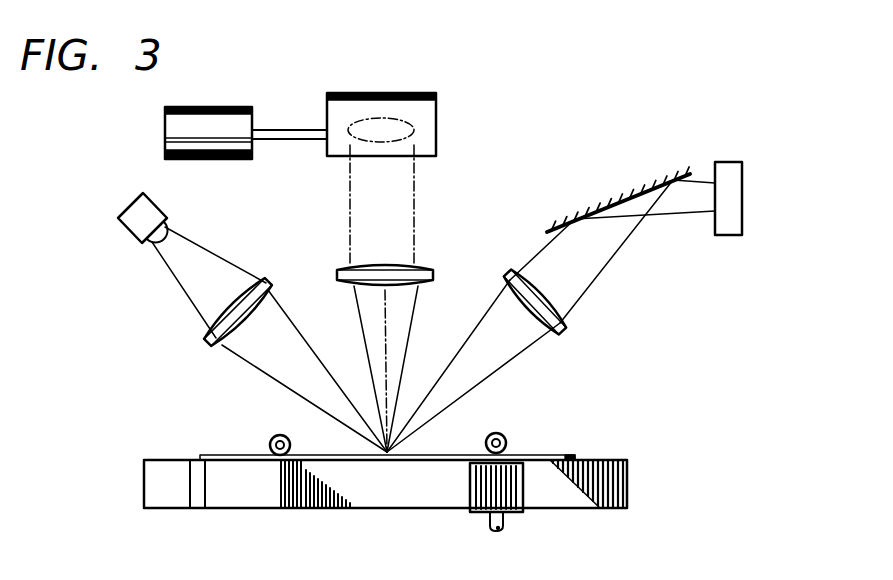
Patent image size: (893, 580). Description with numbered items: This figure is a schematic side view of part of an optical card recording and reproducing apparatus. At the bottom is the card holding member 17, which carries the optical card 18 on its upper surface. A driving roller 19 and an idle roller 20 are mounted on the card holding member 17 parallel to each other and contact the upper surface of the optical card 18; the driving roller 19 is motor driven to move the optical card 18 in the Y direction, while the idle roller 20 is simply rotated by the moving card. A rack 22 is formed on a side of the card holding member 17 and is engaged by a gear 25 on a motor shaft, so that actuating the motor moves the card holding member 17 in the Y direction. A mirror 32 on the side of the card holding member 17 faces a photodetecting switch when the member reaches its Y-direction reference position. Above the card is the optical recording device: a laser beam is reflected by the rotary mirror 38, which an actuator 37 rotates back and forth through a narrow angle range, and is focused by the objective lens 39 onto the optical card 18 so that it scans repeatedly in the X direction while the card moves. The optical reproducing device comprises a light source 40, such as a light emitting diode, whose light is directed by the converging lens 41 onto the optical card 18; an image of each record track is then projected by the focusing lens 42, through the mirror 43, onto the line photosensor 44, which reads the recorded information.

The card holding member 17 is at (588, 461).
The optical card 18 is at (458, 455).
The driving roller 19 is at (272, 439).
The idle roller 20 is at (507, 440).
The rack 22 is at (567, 495).
The gear 25 is at (470, 497).
The mirror 32 is at (198, 497).
The actuator 37 is at (172, 129).
The rotary mirror 38 is at (425, 112).
The objective lens 39 is at (373, 263).
The light source 40 is at (140, 222).
The converging lens 41 is at (225, 312).
The focusing lens 42 is at (557, 304).
The mirror 43 is at (617, 198).
The line photosensor 44 is at (727, 222).